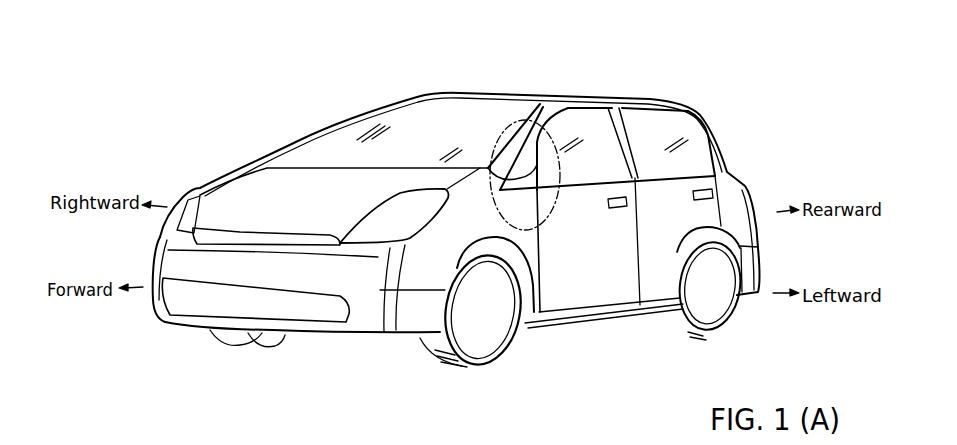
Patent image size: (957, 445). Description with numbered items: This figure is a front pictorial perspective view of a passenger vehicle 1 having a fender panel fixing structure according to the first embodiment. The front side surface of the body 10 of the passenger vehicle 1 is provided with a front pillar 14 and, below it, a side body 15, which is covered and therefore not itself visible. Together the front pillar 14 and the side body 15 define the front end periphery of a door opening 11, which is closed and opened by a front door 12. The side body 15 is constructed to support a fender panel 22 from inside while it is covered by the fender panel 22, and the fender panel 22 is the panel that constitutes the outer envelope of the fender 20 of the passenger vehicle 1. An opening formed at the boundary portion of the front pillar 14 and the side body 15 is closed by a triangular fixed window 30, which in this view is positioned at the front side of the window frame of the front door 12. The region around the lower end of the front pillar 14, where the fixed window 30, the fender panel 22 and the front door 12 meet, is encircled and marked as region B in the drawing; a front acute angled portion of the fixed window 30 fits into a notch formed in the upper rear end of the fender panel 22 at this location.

The passenger vehicle 1 is at (683, 70).
The body 10 is at (583, 80).
The door opening 11 is at (541, 198).
The front door 12 is at (598, 265).
The front pillar 14 is at (515, 148).
The side body 15 is at (518, 205).
The fender 20 is at (430, 253).
The fender panel 22 is at (468, 223).
The fixed window 30 is at (500, 170).
The region B is at (503, 128).